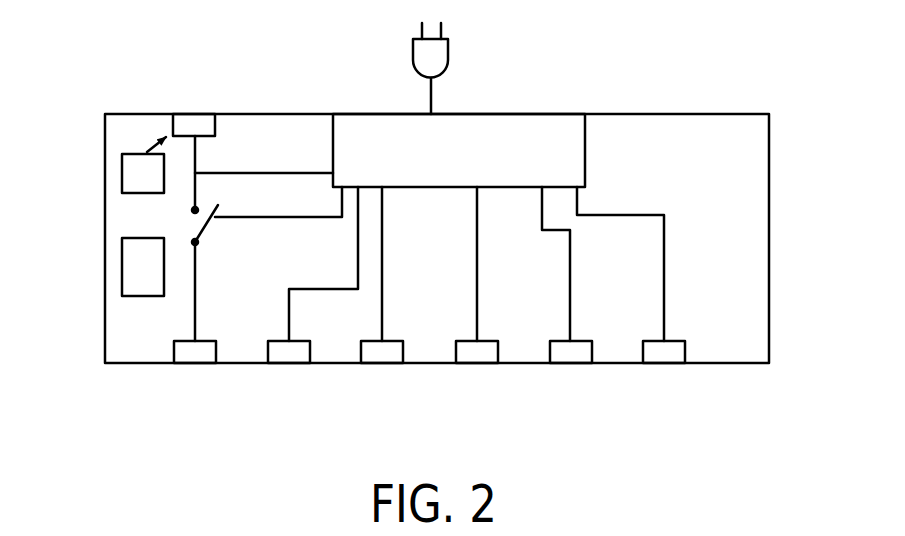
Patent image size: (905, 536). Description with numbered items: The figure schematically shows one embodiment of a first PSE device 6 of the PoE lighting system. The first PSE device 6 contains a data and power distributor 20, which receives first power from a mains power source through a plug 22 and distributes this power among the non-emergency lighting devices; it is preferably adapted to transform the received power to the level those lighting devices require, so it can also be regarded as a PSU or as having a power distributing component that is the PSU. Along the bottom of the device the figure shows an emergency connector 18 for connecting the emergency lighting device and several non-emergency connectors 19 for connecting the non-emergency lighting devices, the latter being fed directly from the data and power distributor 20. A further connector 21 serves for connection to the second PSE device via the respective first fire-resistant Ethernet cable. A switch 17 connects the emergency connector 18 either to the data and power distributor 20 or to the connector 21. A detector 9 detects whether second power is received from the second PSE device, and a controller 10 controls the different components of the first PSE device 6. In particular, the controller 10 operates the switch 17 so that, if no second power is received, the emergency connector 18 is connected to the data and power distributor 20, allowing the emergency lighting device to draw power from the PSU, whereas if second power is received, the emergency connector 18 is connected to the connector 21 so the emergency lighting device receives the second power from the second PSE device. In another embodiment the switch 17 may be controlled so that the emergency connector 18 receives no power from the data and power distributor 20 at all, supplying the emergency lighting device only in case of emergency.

The first PSE device 6 is at (769, 150).
The detector 9 is at (122, 172).
The controller 10 is at (122, 263).
The switch 17 is at (216, 229).
The emergency connector 18 is at (174, 349).
The non-emergency connectors 19 is at (700, 350).
The data and power distributor 20 is at (585, 145).
The connector 21 is at (215, 125).
The plug 22 is at (448, 55).